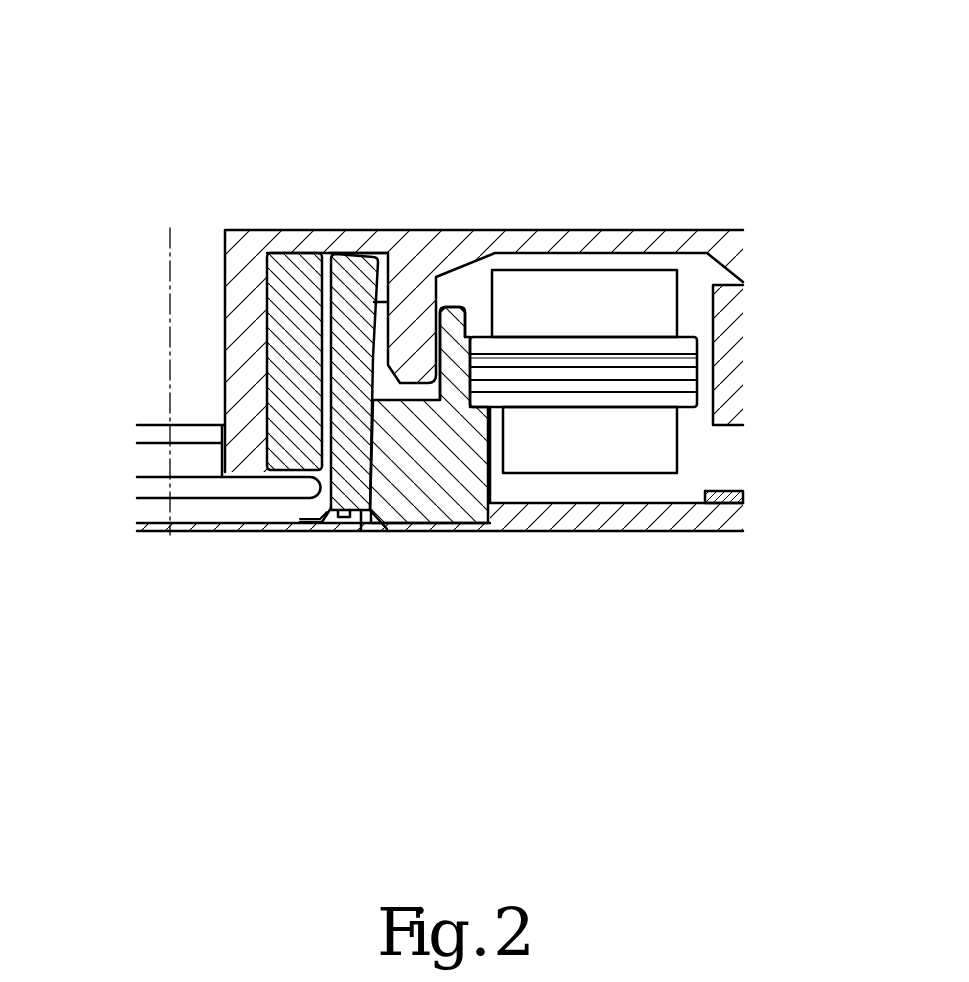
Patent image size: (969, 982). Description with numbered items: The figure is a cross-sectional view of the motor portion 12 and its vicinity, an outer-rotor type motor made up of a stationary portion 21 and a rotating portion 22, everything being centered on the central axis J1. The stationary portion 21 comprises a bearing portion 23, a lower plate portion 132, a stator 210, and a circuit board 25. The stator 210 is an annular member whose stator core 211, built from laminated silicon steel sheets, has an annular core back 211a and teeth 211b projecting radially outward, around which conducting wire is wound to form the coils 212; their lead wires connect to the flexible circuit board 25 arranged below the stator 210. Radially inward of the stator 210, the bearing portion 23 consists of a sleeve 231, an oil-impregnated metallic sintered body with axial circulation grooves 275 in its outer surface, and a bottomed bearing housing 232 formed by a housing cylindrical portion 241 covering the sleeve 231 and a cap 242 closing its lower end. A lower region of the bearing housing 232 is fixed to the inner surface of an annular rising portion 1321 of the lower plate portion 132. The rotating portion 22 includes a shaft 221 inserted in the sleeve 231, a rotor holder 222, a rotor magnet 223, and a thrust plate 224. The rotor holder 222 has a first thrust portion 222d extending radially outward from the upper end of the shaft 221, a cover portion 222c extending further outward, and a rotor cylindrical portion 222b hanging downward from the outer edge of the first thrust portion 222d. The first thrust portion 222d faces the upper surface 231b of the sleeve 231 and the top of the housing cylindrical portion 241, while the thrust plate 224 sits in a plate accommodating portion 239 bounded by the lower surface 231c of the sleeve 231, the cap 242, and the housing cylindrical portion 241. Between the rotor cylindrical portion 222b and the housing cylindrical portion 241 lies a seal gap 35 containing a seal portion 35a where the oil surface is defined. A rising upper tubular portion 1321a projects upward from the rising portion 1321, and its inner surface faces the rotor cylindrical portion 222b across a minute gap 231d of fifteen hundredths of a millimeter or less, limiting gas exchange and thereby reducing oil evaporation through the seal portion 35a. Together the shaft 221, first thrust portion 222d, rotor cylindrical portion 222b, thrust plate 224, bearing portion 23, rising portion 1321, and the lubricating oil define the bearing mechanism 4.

The bearing mechanism 4 is at (197, 137).
The motor portion 12 is at (231, 53).
The central axis J1 is at (162, 250).
The stationary portion 21 is at (640, 419).
The stator 210 is at (646, 337).
The stator core 211 is at (623, 374).
The core back 211a is at (483, 402).
The teeth 211b is at (583, 382).
The coils 212 is at (648, 280).
The rotating portion 22 is at (508, 237).
The shaft 221 is at (250, 290).
The rotor holder 222 is at (484, 229).
The rotor cylindrical portion 222b is at (502, 258).
The cover portion 222c is at (580, 245).
The first thrust portion 222d is at (355, 257).
The rotor magnet 223 is at (725, 340).
The thrust plate 224 is at (148, 524).
The bearing portion 23 is at (269, 440).
The sleeve 231 is at (177, 386).
The upper surface of the sleeve 231b is at (293, 255).
The lower surface of the sleeve 231c is at (283, 490).
The minute gap 231d is at (455, 330).
The bearing housing 232 is at (322, 596).
The plate accommodating portion 239 is at (292, 522).
The housing cylindrical portion 241 is at (362, 515).
The cap 242 is at (301, 521).
The circuit board 25 is at (735, 504).
The circulation grooves 275 is at (323, 358).
The seal gap 35 is at (418, 321).
The seal portion 35a is at (390, 292).
The lower plate portion 132 is at (487, 482).
The rising portion 1321 is at (624, 482).
The rising upper tubular portion 1321a is at (447, 358).